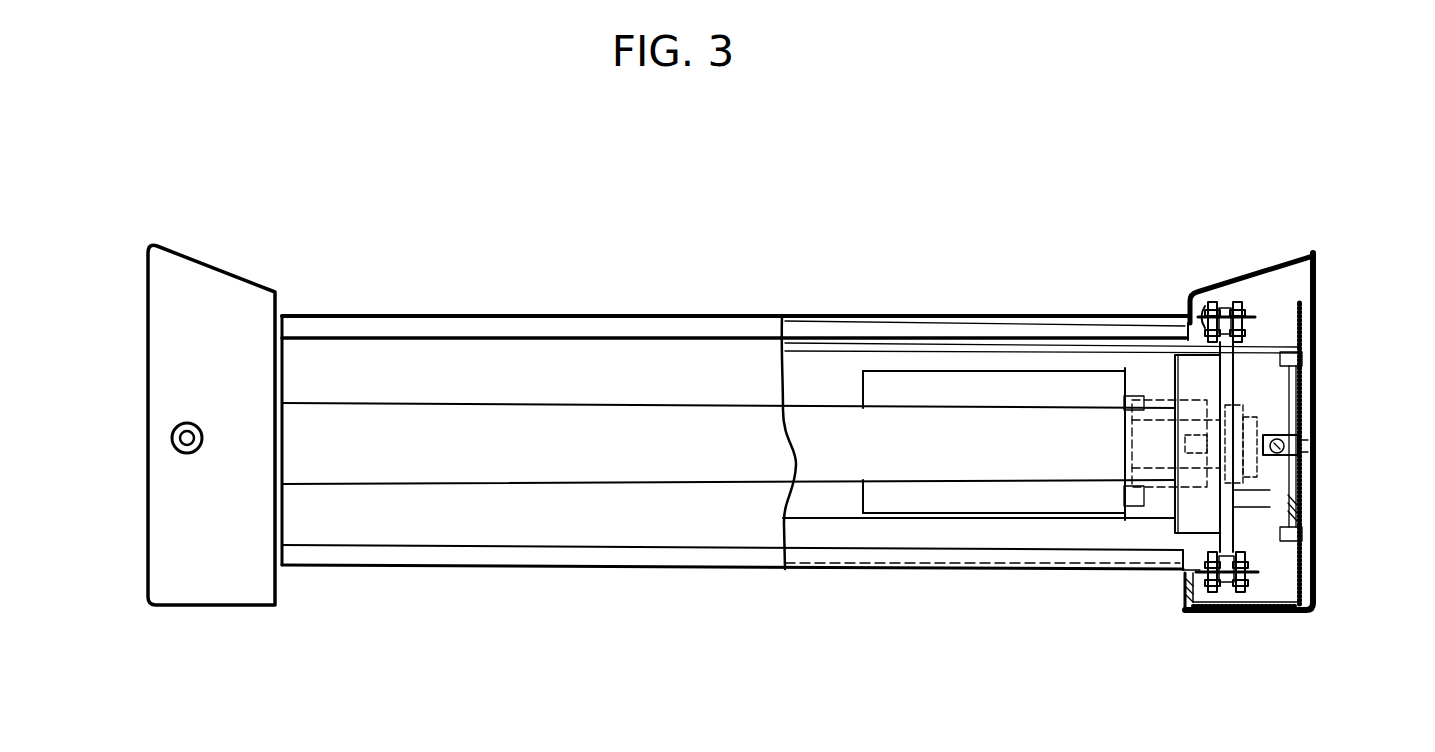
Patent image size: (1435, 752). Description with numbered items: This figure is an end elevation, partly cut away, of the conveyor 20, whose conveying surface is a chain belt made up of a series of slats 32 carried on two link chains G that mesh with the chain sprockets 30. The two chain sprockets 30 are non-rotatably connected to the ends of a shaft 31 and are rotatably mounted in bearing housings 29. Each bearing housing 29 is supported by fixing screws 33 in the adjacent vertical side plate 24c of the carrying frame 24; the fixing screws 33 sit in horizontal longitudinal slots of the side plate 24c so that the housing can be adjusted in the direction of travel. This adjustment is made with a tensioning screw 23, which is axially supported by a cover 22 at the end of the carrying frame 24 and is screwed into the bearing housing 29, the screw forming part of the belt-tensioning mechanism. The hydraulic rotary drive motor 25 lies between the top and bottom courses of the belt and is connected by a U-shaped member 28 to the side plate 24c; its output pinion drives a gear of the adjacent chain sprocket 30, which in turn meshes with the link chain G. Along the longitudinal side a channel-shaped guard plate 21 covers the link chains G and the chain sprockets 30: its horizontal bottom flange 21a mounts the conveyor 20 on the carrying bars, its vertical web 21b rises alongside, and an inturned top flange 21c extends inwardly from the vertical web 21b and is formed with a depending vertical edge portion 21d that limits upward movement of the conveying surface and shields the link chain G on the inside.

The conveyor 20 is at (734, 369).
The guard plate 21 is at (1277, 382).
The horizontal bottom flange 21a is at (1255, 612).
The vertical web 21b is at (1350, 446).
The inturned top flange 21c is at (1251, 237).
The depending vertical edge portion 21d is at (1183, 313).
The cover 22 is at (211, 377).
The tensioning screw 23 is at (701, 449).
The carrying frame 24 is at (908, 325).
The vertical side plate 24c is at (1359, 438).
The hydraulic rotary drive motor 25 is at (1003, 536).
The U-shaped member 28 is at (1231, 542).
The bearing housing 29 is at (1258, 493).
The chain sprocket 30 is at (1177, 519).
The shaft 31 is at (812, 510).
The slat 32 is at (741, 366).
The fixing screw 33 is at (1354, 438).
The link chain G is at (1292, 439).